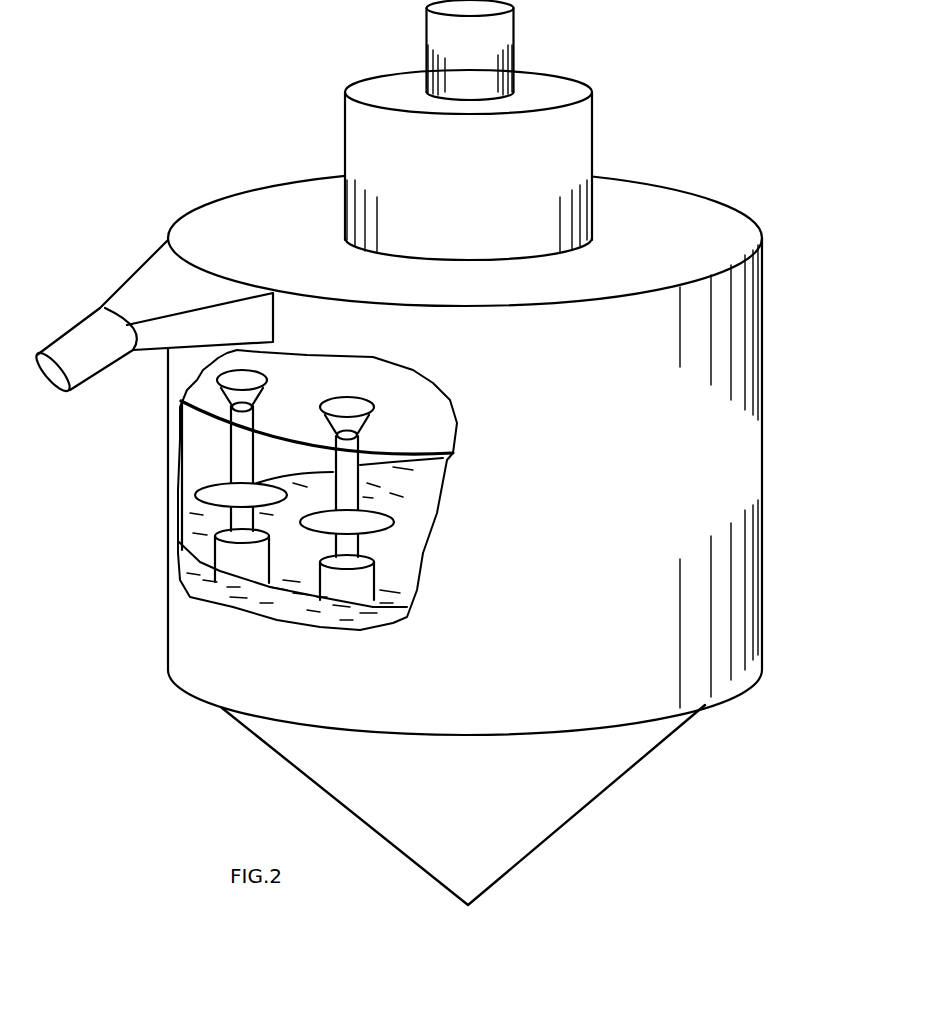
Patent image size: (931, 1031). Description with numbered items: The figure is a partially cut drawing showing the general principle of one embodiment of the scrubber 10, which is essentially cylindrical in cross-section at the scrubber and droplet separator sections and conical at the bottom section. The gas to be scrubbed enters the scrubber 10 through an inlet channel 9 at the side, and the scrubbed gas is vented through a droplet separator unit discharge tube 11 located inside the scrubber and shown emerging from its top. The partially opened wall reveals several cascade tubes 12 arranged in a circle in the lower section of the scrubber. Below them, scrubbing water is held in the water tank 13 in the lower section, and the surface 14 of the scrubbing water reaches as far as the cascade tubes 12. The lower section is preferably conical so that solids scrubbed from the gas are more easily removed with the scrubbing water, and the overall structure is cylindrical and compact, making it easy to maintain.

The inlet channel 9 is at (140, 278).
The scrubber 10 is at (801, 270).
The droplet separator unit discharge tube 11 is at (502, 30).
The cascade tubes 12 is at (363, 493).
The water tank 13 is at (343, 773).
The surface of the scrubbing water 14 is at (185, 538).